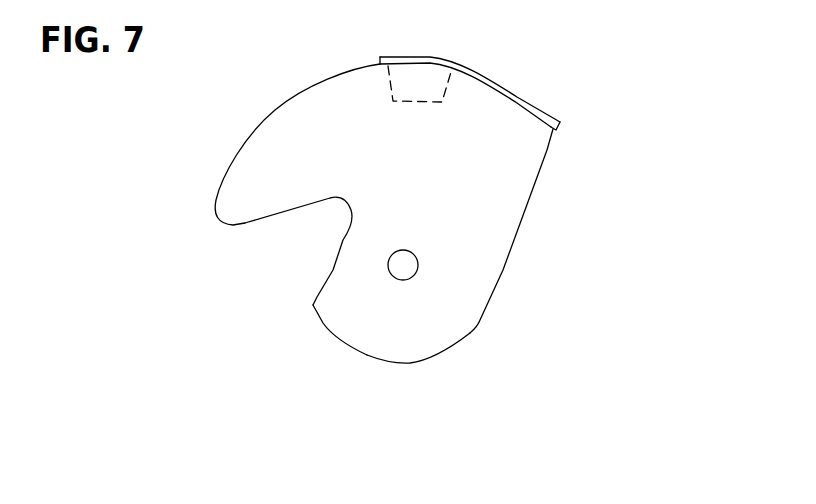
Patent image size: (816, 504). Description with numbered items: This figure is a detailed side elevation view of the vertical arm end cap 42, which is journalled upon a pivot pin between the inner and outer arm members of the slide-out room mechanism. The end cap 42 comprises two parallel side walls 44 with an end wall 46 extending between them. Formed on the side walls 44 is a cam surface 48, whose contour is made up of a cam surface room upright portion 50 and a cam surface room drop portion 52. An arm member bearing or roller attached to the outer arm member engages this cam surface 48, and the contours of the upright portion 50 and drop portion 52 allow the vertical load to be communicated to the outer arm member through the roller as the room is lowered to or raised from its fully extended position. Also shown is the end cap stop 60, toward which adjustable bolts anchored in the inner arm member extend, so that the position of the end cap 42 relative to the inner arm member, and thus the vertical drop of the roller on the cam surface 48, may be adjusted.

The vertical arm end cap 42 is at (447, 219).
The side walls 44 is at (515, 208).
The end wall 46 is at (520, 93).
The cam surface 48 is at (308, 315).
The cam surface room upright portion 50 is at (370, 358).
The cam surface room drop portion 52 is at (337, 258).
The end cap stop 60 is at (420, 85).